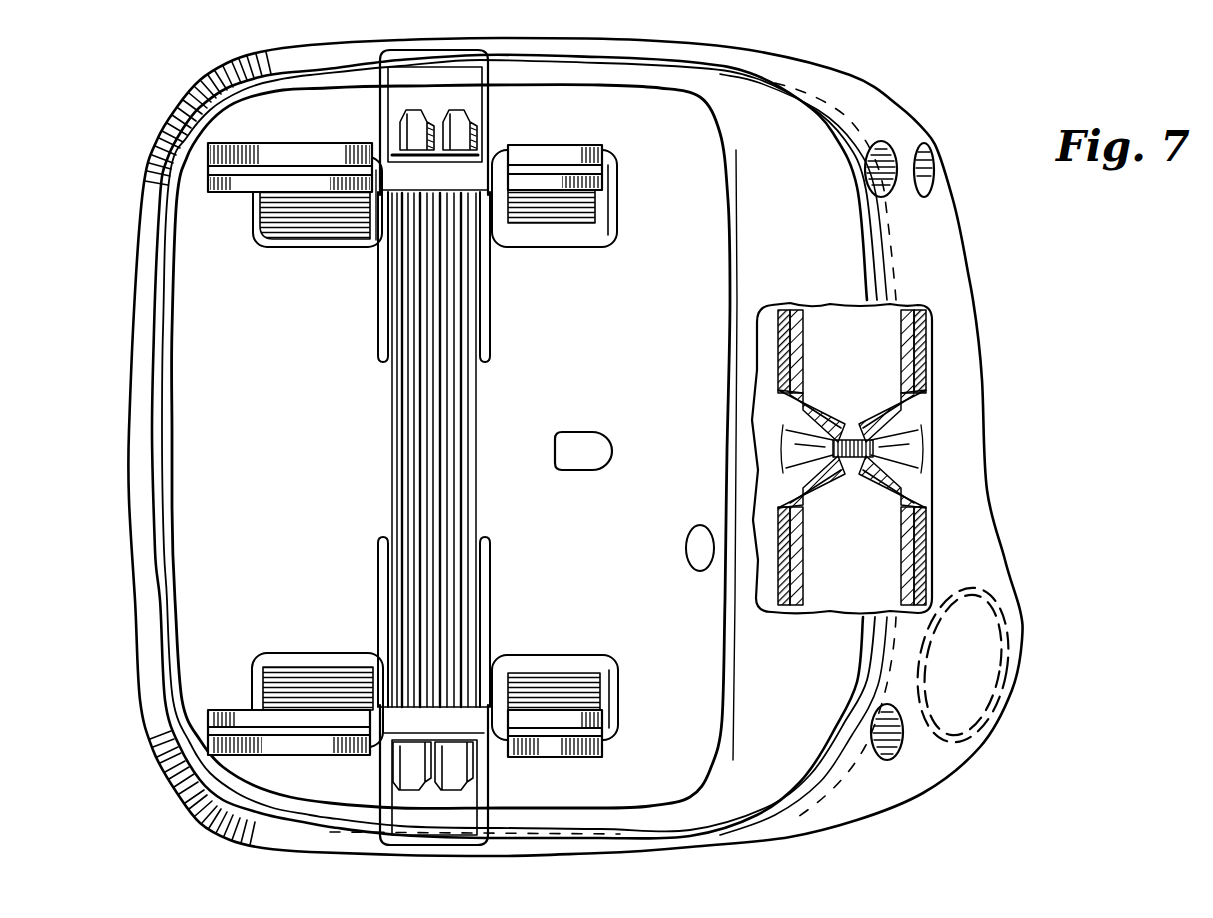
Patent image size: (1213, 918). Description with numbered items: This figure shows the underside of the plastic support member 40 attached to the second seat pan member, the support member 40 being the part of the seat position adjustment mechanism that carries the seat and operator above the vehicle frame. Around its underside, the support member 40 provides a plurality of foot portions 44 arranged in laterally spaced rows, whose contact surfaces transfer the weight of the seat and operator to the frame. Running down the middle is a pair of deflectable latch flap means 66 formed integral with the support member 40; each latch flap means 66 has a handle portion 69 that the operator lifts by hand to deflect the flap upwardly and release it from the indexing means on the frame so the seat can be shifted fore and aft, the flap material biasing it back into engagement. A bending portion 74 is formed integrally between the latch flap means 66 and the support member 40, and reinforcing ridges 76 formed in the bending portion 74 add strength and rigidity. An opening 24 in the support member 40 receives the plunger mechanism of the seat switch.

The support member 40 is at (622, 561).
The foot portion 44 is at (270, 138).
The latch flap means 66 is at (437, 288).
The handle portion 69 is at (427, 67).
The bending portion 74 is at (485, 363).
The reinforcing ridges 76 is at (423, 508).
The opening 24 is at (576, 432).